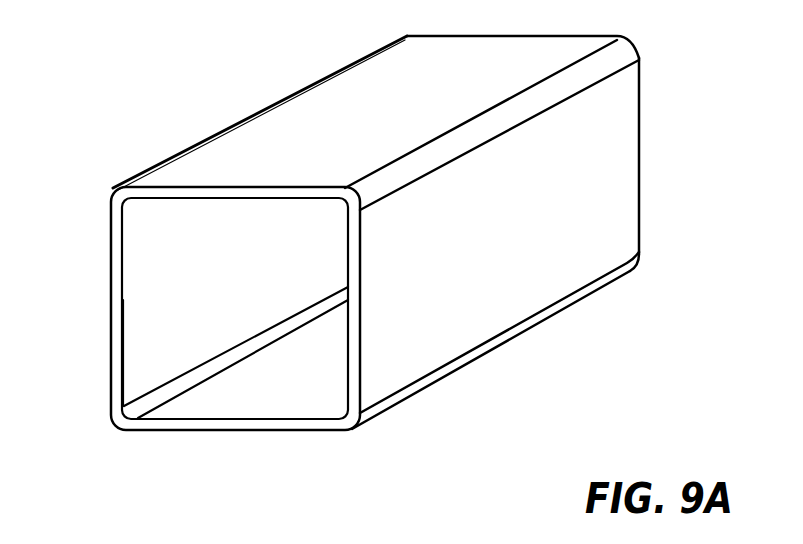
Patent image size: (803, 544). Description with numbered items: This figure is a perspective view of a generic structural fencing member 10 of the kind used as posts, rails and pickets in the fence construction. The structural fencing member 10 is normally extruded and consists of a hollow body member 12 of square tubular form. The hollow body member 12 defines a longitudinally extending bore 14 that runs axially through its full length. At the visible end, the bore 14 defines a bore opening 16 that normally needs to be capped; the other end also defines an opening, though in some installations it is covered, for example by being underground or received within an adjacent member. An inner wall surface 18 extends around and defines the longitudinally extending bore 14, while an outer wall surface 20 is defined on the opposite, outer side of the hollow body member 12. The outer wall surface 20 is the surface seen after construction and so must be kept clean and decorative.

The structural fencing member 10 is at (513, 229).
The hollow body member 12 is at (303, 140).
The longitudinally extending bore 14 is at (250, 305).
The bore opening 16 is at (175, 340).
The inner wall surface 18 is at (227, 271).
The outer wall surface 20 is at (413, 117).